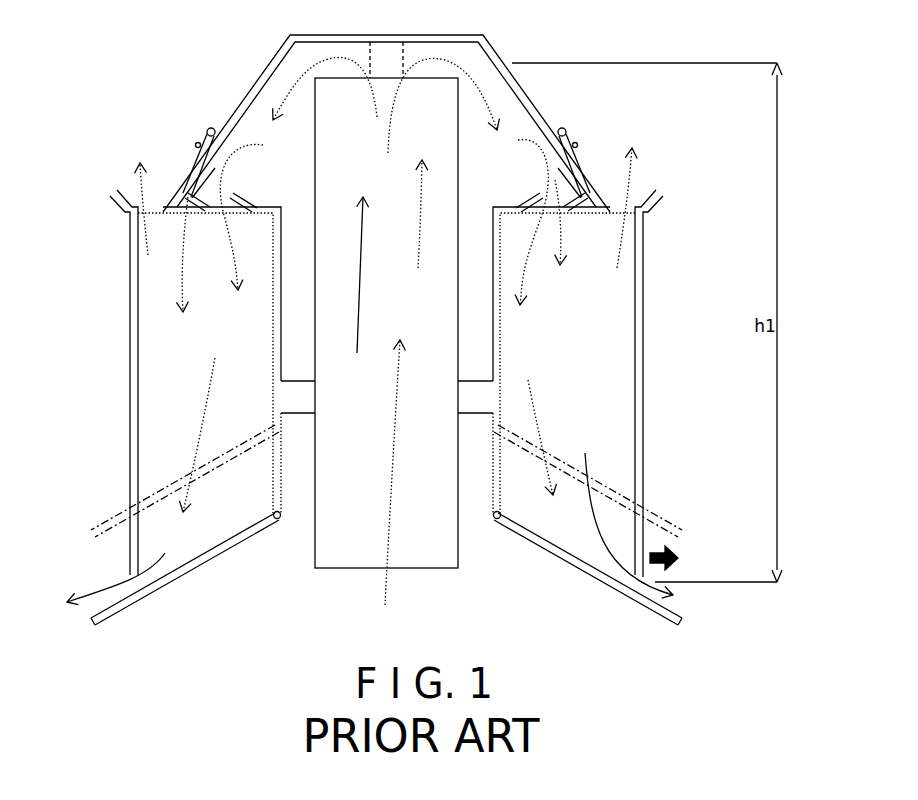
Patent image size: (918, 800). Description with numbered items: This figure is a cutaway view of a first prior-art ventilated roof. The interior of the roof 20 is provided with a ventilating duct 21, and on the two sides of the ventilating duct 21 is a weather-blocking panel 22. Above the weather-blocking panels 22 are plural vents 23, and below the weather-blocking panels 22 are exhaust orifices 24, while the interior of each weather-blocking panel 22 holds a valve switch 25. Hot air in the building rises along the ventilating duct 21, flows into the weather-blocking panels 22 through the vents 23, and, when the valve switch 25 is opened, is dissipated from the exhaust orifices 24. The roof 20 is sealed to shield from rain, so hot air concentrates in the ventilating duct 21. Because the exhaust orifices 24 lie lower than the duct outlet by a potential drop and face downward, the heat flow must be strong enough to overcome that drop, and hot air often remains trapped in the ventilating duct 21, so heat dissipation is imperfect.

The roof 20 is at (495, 92).
The ventilating duct 21 is at (452, 540).
The weather-blocking panel 22 is at (642, 345).
The vents 23 is at (550, 172).
The exhaust orifices 24 is at (647, 580).
The valve switch 25 is at (622, 497).